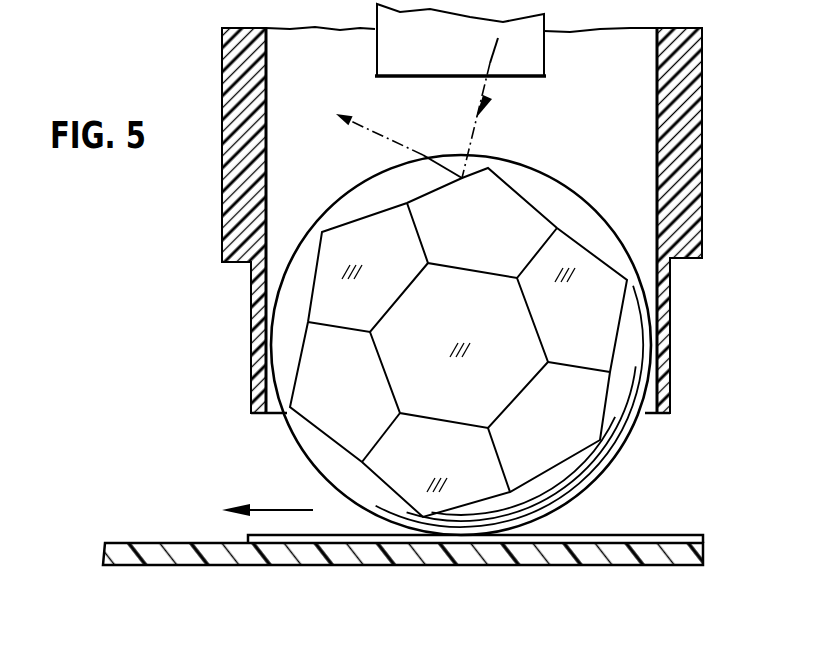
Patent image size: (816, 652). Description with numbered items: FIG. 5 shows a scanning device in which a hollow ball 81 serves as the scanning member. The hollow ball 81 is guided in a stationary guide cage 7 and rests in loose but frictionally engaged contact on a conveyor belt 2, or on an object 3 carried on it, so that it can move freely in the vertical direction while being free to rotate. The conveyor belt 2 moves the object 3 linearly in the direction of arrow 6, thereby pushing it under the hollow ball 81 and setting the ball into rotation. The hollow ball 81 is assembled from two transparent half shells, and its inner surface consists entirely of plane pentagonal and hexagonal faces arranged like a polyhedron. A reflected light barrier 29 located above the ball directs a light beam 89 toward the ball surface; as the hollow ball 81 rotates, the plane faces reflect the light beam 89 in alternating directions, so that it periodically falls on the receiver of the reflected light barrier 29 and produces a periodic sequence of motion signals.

The conveyor belt 2 is at (158, 553).
The object 3 is at (668, 535).
The arrow 6 is at (278, 507).
The guide cage 7 is at (683, 95).
The reflected light barrier 29 is at (537, 32).
The hollow ball 81 is at (583, 207).
The light beam 89 is at (473, 136).